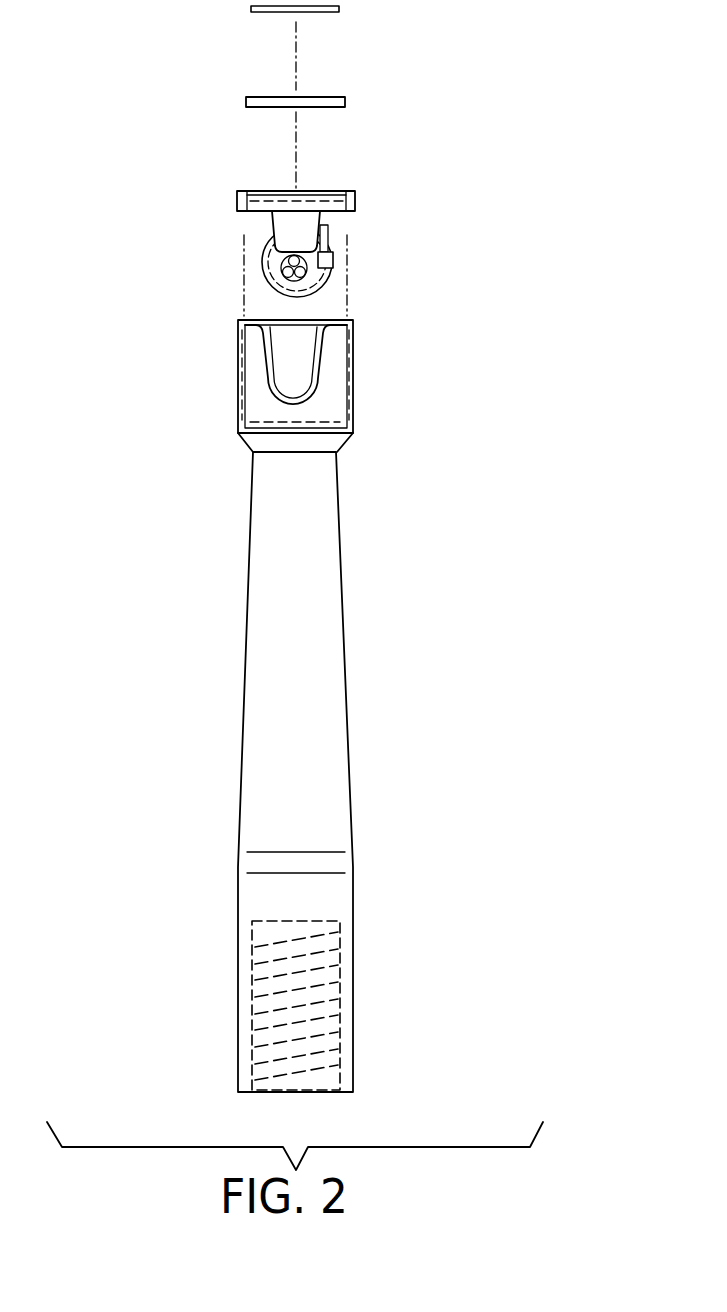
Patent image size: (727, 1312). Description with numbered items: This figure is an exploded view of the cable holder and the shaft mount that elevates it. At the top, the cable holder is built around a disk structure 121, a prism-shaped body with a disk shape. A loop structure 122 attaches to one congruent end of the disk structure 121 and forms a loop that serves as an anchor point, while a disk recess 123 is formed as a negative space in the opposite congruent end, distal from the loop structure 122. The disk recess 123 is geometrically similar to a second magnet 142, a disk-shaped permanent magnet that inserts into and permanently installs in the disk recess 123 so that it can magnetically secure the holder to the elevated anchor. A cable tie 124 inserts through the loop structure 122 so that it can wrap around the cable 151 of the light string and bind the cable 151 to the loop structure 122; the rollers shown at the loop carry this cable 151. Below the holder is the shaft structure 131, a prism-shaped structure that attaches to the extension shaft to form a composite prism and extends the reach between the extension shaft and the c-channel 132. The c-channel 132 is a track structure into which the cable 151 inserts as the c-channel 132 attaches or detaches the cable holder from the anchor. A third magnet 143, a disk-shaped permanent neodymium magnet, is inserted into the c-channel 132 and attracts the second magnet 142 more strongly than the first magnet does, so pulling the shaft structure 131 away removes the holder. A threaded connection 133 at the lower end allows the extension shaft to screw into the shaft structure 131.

The disk structure 121 is at (355, 201).
The loop structure 122 is at (283, 226).
The disk recess 123 is at (307, 205).
The cable tie 124 is at (333, 278).
The shaft structure 131 is at (307, 781).
The c-channel 132 is at (380, 322).
The threaded connection 133 is at (300, 1013).
The second magnet 142 is at (345, 102).
The third magnet 143 is at (331, 425).
The cable 151 is at (297, 268).